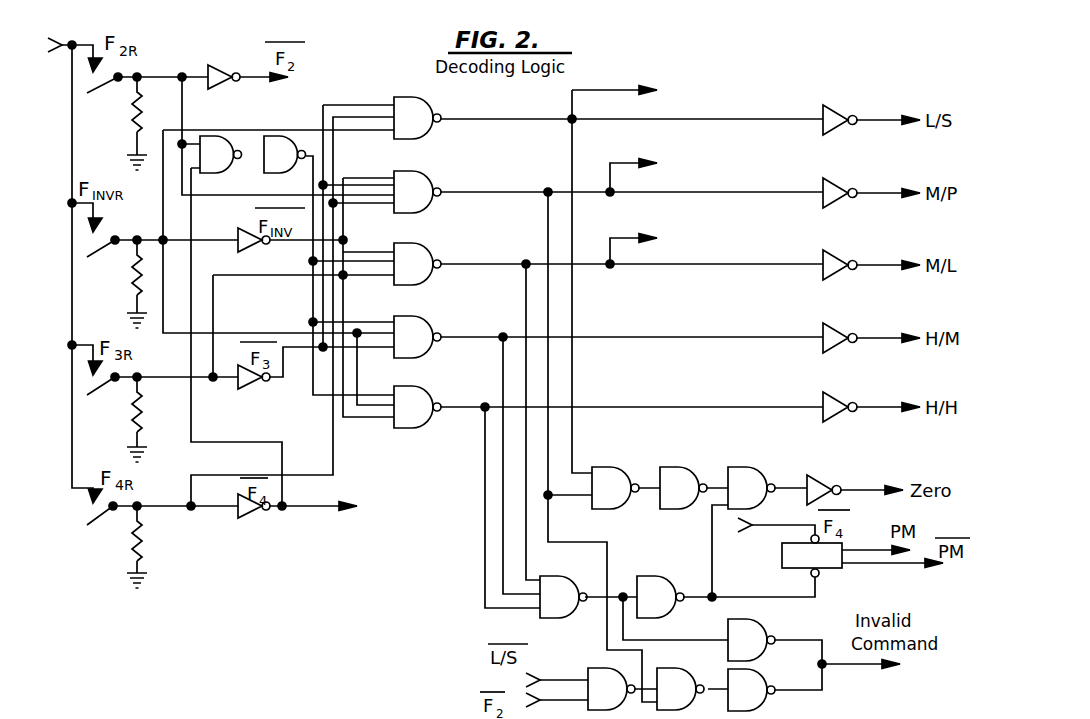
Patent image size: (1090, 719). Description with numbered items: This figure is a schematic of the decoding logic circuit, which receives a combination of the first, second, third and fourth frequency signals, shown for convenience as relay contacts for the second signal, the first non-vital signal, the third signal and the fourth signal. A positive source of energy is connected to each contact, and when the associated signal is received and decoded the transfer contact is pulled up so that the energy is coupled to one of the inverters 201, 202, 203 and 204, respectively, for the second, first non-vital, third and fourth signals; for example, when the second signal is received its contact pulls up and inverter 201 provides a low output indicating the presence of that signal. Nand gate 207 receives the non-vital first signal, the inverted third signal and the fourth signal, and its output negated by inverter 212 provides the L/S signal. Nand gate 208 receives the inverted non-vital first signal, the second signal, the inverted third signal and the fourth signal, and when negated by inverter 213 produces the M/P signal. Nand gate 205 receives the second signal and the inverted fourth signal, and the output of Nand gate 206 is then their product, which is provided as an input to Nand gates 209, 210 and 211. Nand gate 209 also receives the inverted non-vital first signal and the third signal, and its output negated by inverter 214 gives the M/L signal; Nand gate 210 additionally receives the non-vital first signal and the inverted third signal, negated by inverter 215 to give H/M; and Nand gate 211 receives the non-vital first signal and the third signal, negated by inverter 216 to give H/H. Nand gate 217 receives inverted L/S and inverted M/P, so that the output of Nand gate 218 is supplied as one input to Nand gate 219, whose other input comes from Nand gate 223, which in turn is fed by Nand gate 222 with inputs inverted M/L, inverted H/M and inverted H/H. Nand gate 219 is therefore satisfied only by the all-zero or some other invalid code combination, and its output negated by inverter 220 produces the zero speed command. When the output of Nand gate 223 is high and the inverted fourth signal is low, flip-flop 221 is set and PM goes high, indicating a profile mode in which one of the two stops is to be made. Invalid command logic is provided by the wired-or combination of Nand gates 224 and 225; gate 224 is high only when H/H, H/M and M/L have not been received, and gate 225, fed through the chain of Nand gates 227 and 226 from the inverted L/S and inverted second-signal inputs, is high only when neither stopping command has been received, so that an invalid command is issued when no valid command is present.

The inverter 201 is at (222, 63).
The inverter 202 is at (246, 247).
The inverter 203 is at (246, 384).
The inverter 204 is at (246, 520).
The Nand gate 205 is at (215, 146).
The Nand gate 206 is at (283, 146).
The Nand gate 207 is at (417, 118).
The Nand gate 208 is at (417, 192).
The Nand gate 209 is at (417, 264).
The Nand gate 210 is at (417, 337).
The Nand gate 211 is at (417, 407).
The inverter 212 is at (841, 111).
The inverter 213 is at (844, 184).
The inverter 214 is at (845, 257).
The inverter 215 is at (842, 329).
The inverter 216 is at (845, 398).
The Nand gate 217 is at (615, 488).
The Nand gate 218 is at (683, 488).
The Nand gate 219 is at (751, 488).
The inverter 220 is at (836, 486).
The flip-flop 221 is at (812, 555).
The Nand gate 222 is at (563, 597).
The Nand gate 223 is at (660, 597).
The Nand gate 224 is at (751, 640).
The Nand gate 225 is at (751, 690).
The Nand gate 226 is at (680, 689).
The Nand gate 227 is at (611, 689).